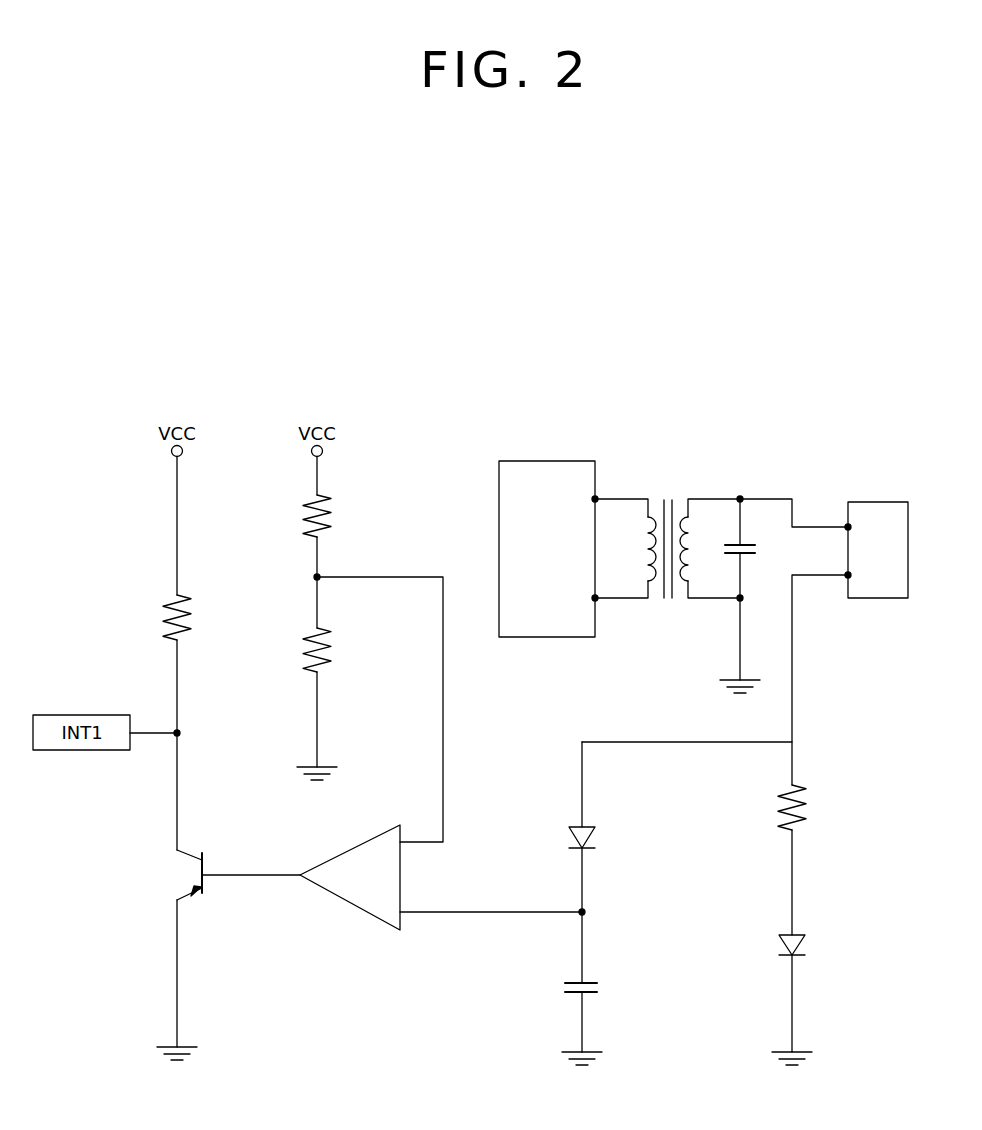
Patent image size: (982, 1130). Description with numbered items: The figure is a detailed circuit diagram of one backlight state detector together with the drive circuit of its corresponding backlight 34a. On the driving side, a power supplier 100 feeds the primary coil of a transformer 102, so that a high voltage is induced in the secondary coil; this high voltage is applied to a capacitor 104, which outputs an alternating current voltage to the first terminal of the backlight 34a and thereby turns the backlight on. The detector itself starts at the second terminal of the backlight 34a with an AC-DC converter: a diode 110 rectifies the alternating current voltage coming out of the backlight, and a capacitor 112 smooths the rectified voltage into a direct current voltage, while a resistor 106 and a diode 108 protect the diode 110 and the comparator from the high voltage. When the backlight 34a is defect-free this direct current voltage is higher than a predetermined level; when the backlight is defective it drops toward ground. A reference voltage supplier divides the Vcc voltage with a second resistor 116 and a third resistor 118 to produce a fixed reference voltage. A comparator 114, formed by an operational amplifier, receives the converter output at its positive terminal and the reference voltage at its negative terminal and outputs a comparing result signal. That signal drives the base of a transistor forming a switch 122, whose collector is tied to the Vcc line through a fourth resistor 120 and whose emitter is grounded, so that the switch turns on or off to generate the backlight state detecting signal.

The power supplier 100 is at (547, 461).
The transformer 102 is at (682, 520).
The capacitor 104 is at (746, 545).
The backlight 34a is at (879, 598).
The resistor 106 is at (806, 812).
The diode 108 is at (800, 931).
The diode 110 is at (594, 825).
The capacitor 112 is at (597, 982).
The comparator 114 is at (337, 895).
The resistor R2 116 is at (331, 519).
The resistor R3 118 is at (331, 654).
The resistor R4 120 is at (191, 621).
The switch 122 is at (203, 889).